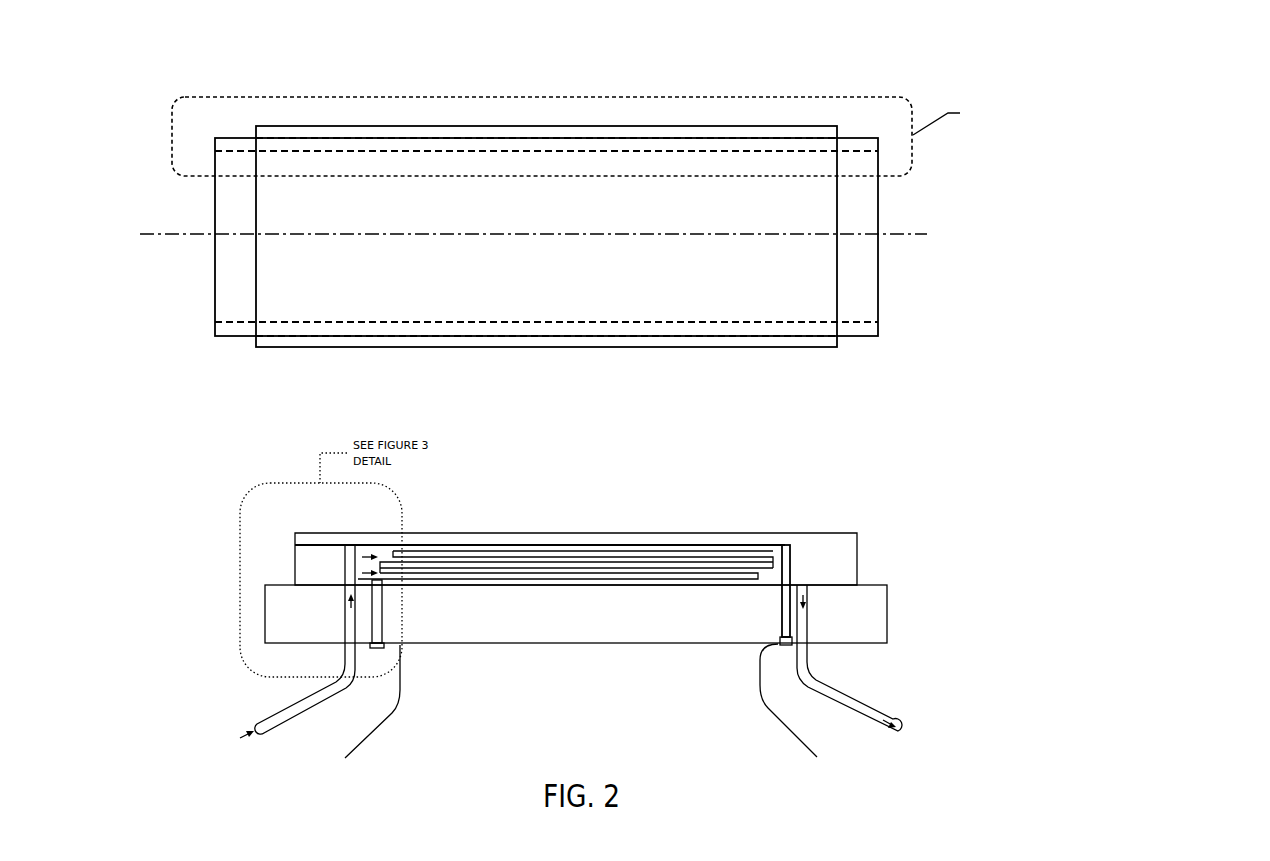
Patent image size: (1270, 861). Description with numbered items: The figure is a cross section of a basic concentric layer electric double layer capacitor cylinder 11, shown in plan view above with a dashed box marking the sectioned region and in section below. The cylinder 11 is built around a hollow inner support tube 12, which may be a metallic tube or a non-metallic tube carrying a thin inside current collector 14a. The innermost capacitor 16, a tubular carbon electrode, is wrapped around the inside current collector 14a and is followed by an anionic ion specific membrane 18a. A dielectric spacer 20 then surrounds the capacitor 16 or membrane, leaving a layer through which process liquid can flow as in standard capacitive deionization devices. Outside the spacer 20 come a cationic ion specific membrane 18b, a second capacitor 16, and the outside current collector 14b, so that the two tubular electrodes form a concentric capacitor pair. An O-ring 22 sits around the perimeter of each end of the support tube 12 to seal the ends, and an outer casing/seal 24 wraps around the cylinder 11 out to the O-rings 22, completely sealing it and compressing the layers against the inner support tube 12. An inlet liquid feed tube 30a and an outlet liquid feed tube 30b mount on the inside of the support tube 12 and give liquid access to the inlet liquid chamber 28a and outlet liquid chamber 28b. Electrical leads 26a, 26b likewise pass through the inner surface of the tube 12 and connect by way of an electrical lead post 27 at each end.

The concentric layer electric double layer capacitor cylinder 11 is at (797, 371).
The inner support tube 12 is at (572, 628).
The inside current collector 14a is at (697, 578).
The outside current collector 14b is at (497, 553).
The capacitor 16 is at (708, 535).
The ion specific membrane (anionic) 18a is at (585, 573).
The ion specific membrane (cationic) 18b is at (473, 562).
The dielectric spacer 20 is at (840, 568).
The O-ring 22 is at (310, 575).
The outer casing/seal 24 is at (388, 538).
The electrical lead 26a is at (383, 722).
The electrical lead 26b is at (778, 722).
The electrical lead post 27 is at (383, 630).
The inlet liquid chamber 28a is at (367, 555).
The outlet liquid chamber 28b is at (795, 563).
The inlet liquid feed tube 30a is at (278, 715).
The outlet liquid feed tube 30b is at (853, 702).